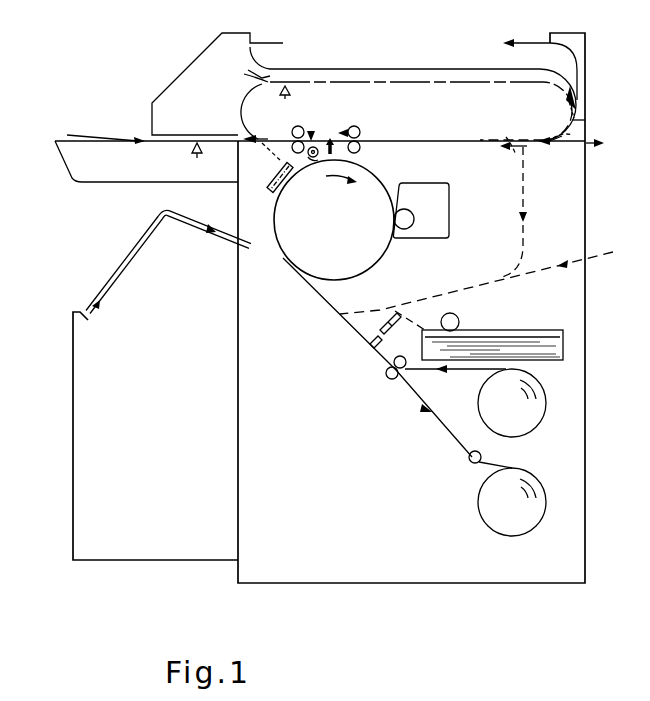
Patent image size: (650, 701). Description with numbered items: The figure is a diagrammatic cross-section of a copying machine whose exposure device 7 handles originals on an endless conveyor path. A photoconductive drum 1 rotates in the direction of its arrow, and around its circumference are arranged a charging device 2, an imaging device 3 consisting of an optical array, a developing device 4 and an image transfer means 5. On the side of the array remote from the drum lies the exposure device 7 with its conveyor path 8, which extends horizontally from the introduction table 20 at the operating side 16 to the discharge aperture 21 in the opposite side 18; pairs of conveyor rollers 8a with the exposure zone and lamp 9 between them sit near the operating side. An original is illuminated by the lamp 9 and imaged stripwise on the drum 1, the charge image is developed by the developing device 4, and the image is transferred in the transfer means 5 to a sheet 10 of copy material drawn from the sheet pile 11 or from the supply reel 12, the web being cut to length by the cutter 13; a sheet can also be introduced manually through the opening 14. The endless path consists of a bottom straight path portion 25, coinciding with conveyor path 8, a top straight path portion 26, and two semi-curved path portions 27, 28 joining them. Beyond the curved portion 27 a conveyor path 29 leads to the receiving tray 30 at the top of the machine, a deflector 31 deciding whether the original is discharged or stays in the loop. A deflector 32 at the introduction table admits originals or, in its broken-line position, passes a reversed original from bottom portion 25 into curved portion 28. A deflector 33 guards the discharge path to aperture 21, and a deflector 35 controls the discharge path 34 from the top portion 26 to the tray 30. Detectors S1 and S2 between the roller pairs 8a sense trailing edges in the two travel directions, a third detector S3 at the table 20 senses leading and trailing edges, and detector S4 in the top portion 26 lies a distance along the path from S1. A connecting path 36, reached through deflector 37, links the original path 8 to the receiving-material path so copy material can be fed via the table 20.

The photoconductive drum 1 is at (366, 252).
The charging device 2 is at (276, 192).
The imaging device 3 is at (335, 160).
The developing device 4 is at (445, 212).
The image transfer means 5 is at (291, 278).
The exposure device 7 is at (320, 160).
The conveyor path 8 is at (252, 143).
The pairs of conveyor rollers 8a is at (293, 150).
The lamp 9 is at (313, 158).
The sheet of copy material 10 is at (142, 236).
The sheet pile 11 is at (512, 332).
The supply reel of copy material 12 is at (530, 427).
The cutter 13 is at (362, 341).
The opening 14 is at (584, 255).
The operating side 16 is at (73, 360).
The opposite side 18 is at (586, 355).
The introduction table 20 is at (70, 135).
The discharge aperture 21 is at (596, 147).
The bottom straight path portion 25 is at (483, 137).
The top straight path portion 26 is at (397, 85).
The curved path portion 27 is at (577, 118).
The curved path portion 28 is at (243, 113).
The conveyor path 29 is at (578, 70).
The receiving tray 30 is at (402, 70).
The deflector 31 is at (572, 100).
The deflector 32 is at (264, 138).
The deflector 33 is at (550, 141).
The discharge path 34 is at (222, 60).
The deflector 35 is at (250, 82).
The connecting path 36 is at (524, 192).
The deflector 37 is at (508, 145).
The detector S1 is at (347, 133).
The detector S2 is at (311, 134).
The detector S3 is at (186, 158).
The detector S4 is at (296, 100).